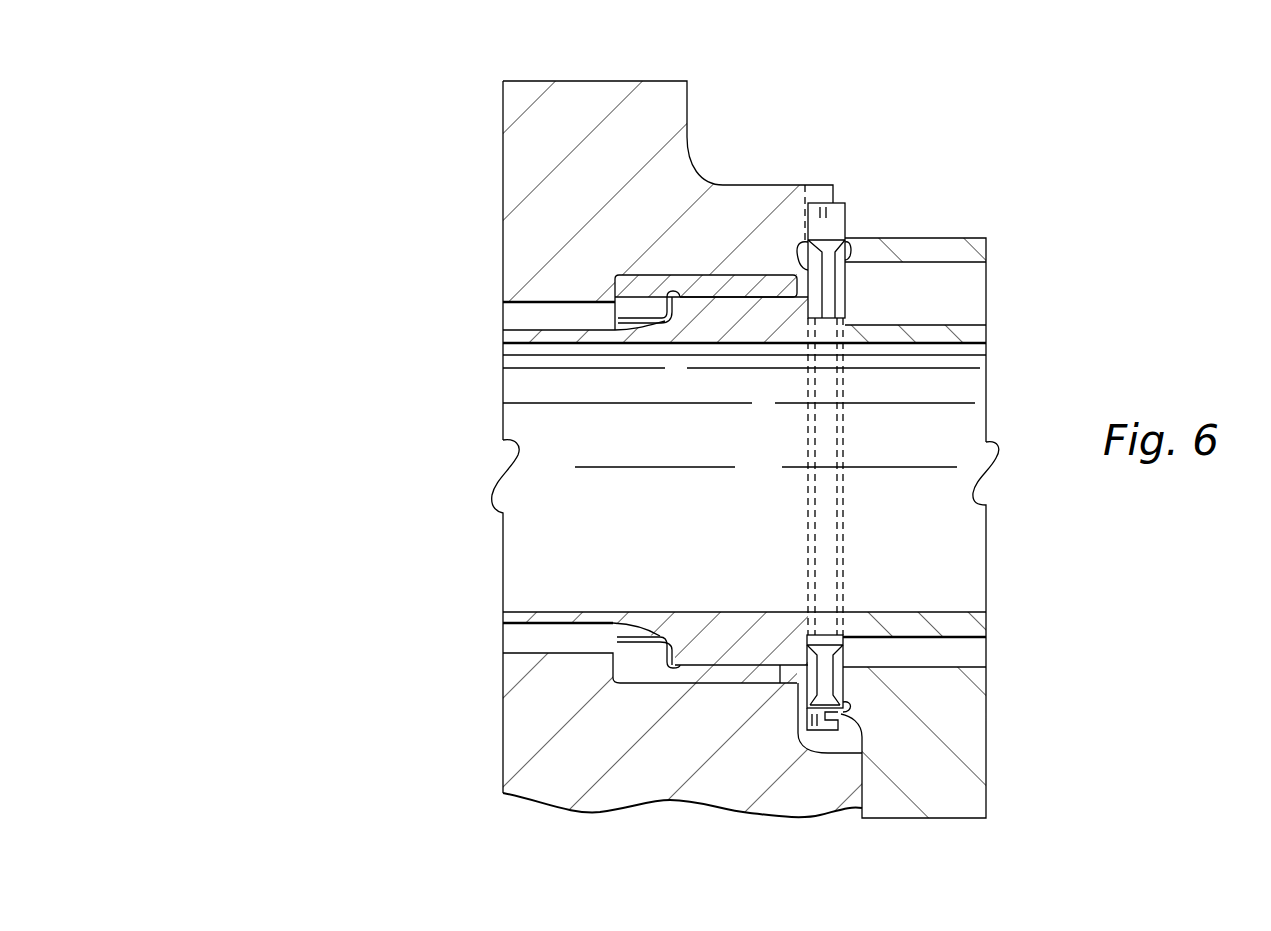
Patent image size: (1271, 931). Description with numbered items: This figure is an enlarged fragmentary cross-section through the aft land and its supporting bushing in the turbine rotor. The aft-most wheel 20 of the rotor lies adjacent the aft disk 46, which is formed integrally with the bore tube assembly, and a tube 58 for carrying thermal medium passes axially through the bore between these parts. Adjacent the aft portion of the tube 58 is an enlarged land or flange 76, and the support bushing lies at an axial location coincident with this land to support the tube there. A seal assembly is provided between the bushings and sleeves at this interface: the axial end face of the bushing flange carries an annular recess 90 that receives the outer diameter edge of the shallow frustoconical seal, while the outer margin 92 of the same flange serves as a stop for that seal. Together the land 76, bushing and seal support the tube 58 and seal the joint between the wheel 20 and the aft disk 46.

The wheel 20 is at (585, 103).
The outer margin 92 is at (648, 279).
The enlarged land or flange 76 is at (748, 303).
The shaft 58 is at (552, 337).
The aft disk 46 is at (978, 722).
The annular recess 90 is at (636, 660).